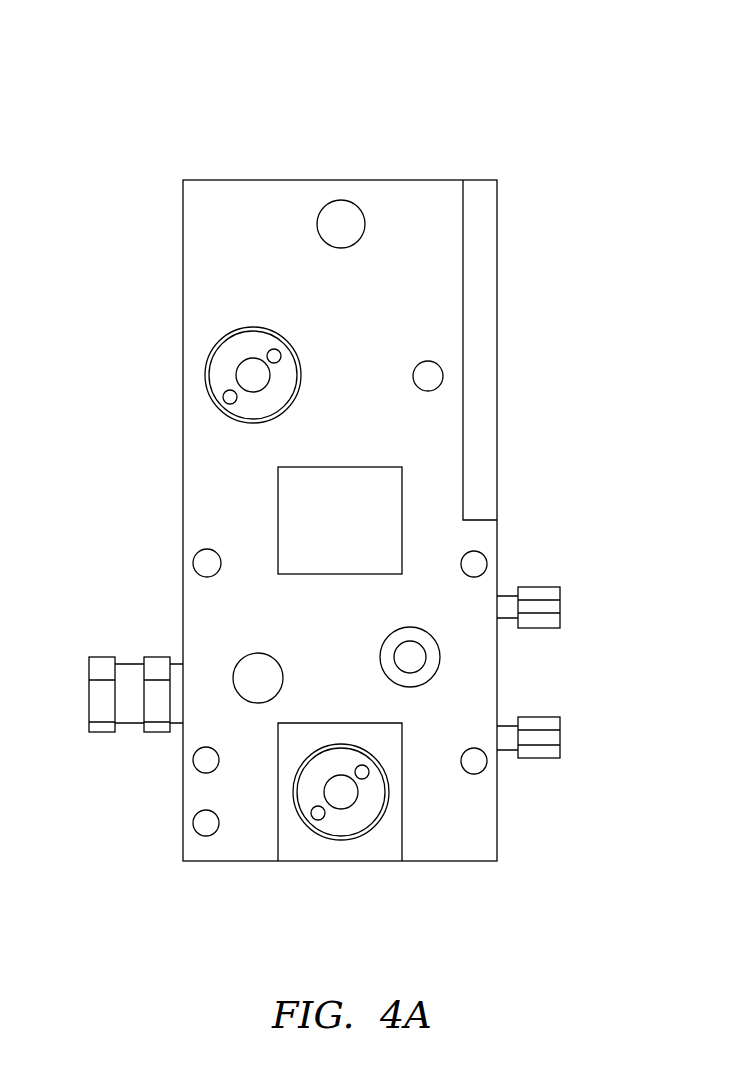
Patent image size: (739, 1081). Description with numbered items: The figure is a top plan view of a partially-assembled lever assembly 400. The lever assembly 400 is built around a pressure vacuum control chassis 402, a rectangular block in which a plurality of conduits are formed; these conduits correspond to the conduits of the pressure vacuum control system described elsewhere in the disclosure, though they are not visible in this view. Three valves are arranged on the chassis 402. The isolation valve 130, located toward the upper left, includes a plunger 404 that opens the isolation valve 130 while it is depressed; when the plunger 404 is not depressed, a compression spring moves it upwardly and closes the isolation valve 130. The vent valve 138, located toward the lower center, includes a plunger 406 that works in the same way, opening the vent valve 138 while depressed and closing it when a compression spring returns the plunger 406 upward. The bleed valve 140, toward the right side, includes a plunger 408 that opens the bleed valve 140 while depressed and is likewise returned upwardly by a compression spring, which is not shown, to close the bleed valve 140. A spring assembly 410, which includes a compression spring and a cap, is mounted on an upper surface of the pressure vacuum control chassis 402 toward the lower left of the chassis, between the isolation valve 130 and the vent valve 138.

The lever assembly 400 is at (542, 95).
The pressure vacuum control chassis 402 is at (483, 827).
The isolation valve 130 is at (227, 332).
The plunger 404 is at (247, 370).
The vent valve 138 is at (365, 837).
The plunger 406 is at (344, 795).
The bleed valve 140 is at (442, 643).
The plunger 408 is at (418, 665).
The spring assembly 410 is at (247, 668).